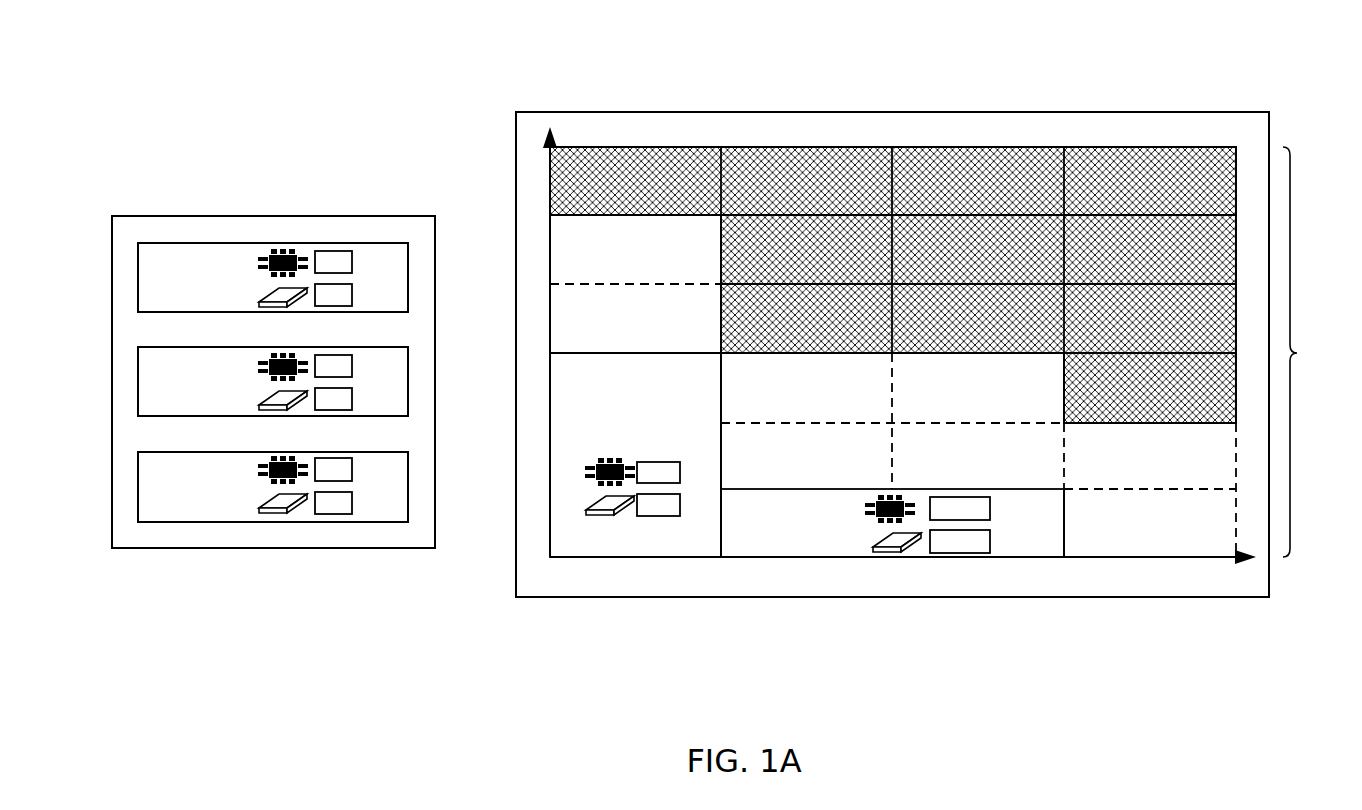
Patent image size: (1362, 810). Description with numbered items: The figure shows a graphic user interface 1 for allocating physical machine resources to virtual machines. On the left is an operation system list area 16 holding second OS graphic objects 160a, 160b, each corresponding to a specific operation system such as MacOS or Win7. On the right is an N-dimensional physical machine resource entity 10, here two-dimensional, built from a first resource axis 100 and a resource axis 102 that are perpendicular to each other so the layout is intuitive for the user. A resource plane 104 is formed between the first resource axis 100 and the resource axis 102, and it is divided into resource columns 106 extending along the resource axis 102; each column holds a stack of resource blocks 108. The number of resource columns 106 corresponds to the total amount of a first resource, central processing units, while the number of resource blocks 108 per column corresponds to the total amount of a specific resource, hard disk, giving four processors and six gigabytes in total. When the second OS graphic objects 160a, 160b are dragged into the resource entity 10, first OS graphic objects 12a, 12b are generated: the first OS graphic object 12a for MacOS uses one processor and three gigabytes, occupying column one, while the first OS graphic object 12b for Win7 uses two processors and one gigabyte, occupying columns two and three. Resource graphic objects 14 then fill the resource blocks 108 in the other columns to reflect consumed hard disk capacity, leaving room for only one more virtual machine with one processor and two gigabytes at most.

The graphic user interface 1 is at (306, 42).
The N-dimensional physical machine resource entity 10 is at (515, 142).
The first OS graphic object 12a is at (625, 545).
The first OS graphic object 12b is at (797, 547).
The resource graphic objects 14 is at (1224, 155).
The operation system list area 16 is at (110, 248).
The first resource axis 100 is at (1245, 570).
The resource axis 102 is at (537, 153).
The resource plane 104 is at (1258, 135).
The resource columns 106 is at (1316, 352).
The resource blocks 108 is at (1158, 547).
The second OS graphic object 160a is at (138, 288).
The second OS graphic object 160b is at (138, 396).